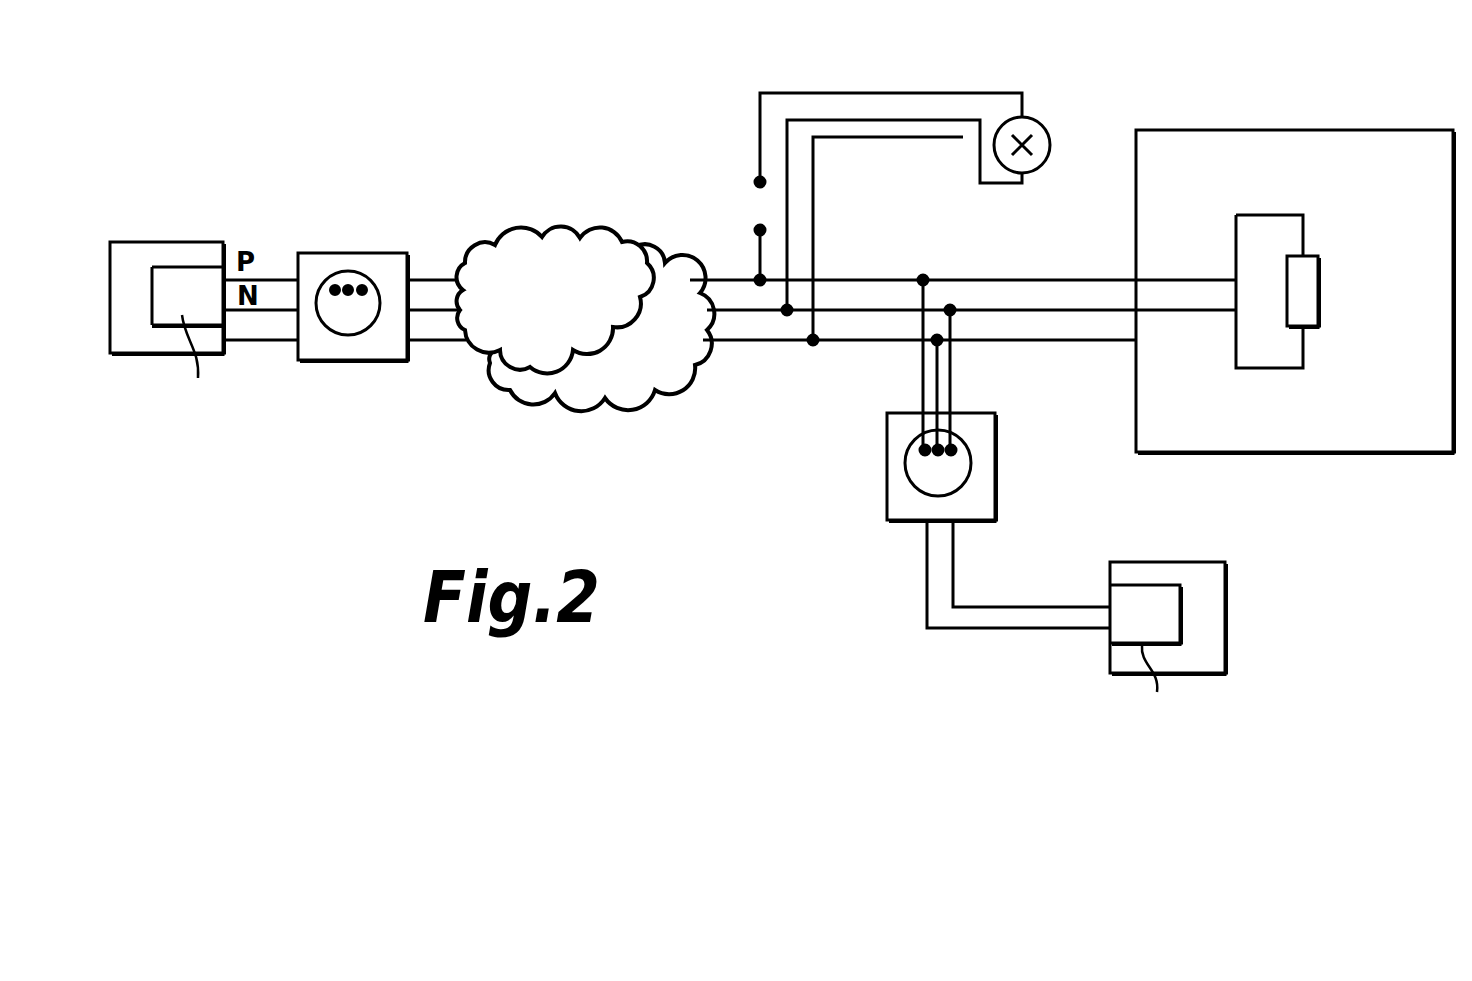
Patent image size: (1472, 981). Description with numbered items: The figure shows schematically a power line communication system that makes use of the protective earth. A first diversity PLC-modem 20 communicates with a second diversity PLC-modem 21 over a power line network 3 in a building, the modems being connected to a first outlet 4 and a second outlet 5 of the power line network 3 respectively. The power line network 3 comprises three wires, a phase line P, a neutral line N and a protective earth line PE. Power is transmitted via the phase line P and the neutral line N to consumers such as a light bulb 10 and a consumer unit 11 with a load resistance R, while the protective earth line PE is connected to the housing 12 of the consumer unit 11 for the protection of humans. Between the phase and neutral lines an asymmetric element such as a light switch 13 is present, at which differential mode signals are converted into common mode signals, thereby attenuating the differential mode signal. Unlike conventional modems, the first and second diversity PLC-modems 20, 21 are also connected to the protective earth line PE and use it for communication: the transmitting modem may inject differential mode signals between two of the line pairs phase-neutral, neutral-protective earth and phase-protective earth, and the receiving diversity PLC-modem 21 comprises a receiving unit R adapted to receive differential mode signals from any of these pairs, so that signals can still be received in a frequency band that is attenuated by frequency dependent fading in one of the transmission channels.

The first diversity PLC-modem 20 is at (155, 243).
The first outlet 4 is at (345, 253).
The power line network 3 is at (522, 233).
The light switch 13 is at (758, 182).
The light bulb 10 is at (1040, 119).
The housing 12 is at (1308, 130).
The consumer unit 11 is at (1408, 193).
The second outlet 5 is at (887, 468).
The second diversity PLC-modem 21 is at (1225, 618).